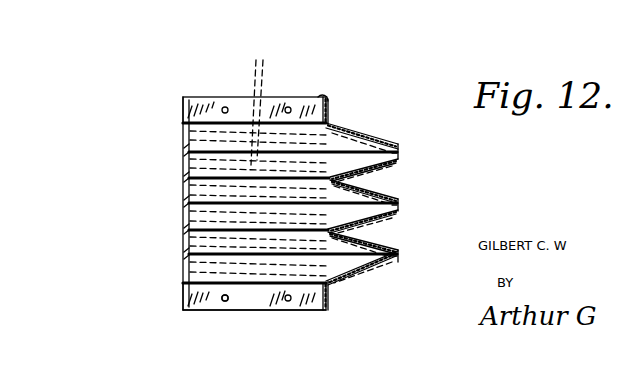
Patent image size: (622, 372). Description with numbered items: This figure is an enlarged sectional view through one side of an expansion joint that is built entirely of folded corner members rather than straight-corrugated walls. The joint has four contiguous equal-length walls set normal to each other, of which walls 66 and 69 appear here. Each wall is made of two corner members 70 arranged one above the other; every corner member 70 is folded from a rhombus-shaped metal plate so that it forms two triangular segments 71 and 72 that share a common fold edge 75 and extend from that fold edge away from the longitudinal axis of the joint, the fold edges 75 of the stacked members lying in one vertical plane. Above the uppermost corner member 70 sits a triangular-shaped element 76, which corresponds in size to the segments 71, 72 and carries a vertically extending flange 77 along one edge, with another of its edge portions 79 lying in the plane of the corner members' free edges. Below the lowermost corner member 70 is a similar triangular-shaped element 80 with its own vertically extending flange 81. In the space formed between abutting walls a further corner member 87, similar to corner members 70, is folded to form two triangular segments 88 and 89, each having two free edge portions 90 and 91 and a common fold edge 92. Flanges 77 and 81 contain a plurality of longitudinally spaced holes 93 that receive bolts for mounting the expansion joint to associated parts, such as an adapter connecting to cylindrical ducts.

The wall 66 is at (275, 193).
The wall 69 is at (222, 94).
The corner member 70 is at (180, 178).
The triangular segment 71 is at (400, 157).
The triangular segment 72 is at (397, 199).
The fold edge 75 is at (188, 191).
The triangular-shaped element 76 is at (342, 121).
The flange 77 is at (321, 98).
The edge portion 79 is at (400, 147).
The triangular-shaped element 80 is at (254, 314).
The flange 81 is at (260, 311).
The corner member 87 is at (181, 153).
The triangular segment 88 is at (340, 140).
The triangular segment 89 is at (338, 158).
The free edge portion 90 is at (264, 102).
The free edge portion 91 is at (386, 143).
The fold edge 92 is at (186, 146).
The holes 93 is at (224, 300).